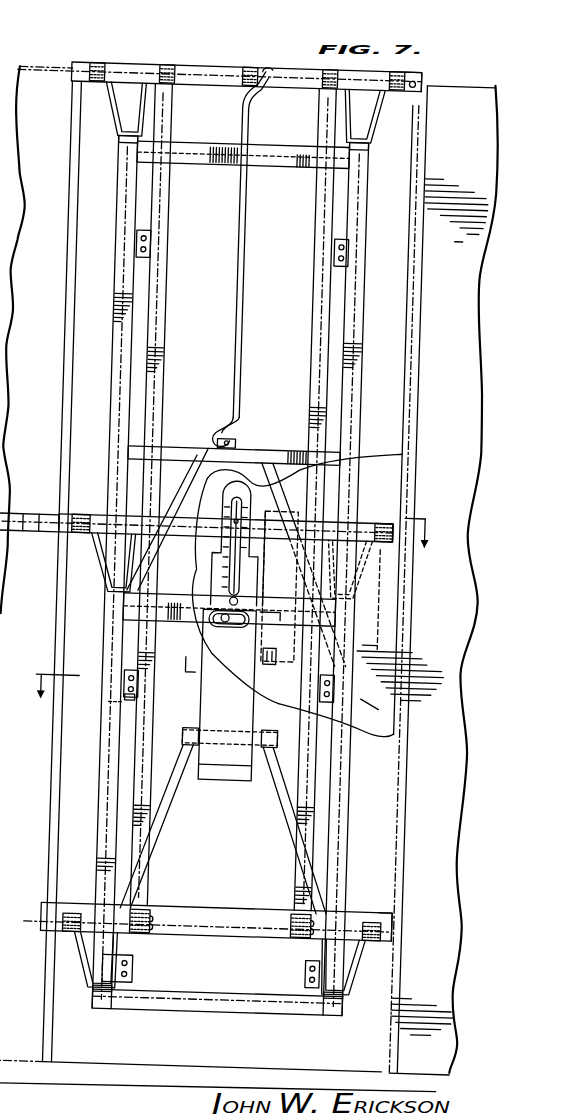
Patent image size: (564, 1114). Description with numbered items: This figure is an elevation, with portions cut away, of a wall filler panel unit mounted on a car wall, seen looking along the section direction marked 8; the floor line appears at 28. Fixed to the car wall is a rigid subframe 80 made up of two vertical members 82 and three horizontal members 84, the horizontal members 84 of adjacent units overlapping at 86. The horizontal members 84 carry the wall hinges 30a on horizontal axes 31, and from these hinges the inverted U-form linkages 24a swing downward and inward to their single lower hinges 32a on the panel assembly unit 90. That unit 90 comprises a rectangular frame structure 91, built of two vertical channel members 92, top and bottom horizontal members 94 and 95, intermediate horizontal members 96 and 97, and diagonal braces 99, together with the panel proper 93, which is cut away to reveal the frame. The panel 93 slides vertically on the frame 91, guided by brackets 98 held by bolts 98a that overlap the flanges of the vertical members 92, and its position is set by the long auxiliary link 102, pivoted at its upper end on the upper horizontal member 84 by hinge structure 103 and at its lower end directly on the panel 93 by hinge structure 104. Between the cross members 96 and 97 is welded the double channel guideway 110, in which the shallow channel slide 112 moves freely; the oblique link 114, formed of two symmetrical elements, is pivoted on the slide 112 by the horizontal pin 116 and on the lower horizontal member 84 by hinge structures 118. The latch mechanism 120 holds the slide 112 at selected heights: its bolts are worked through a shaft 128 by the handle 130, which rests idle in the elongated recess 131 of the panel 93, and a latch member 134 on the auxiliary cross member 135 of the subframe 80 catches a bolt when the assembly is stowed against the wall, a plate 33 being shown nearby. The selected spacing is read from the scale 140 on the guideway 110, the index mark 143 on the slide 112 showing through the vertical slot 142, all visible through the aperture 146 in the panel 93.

The section line 8- 8 is at (238, 608).
The linkage 24a is at (118, 126).
The floor 28 is at (86, 1080).
The hinge structure 30a is at (98, 62).
The axis 31 is at (135, 68).
The hinge structure 32a is at (128, 143).
The plate 33 is at (382, 585).
The subframe 80 is at (175, 132).
The vertical member 82 is at (175, 330).
The horizontal member 84 is at (362, 62).
The overlap 86 is at (68, 514).
The panel assembly unit 90 is at (148, 1064).
The frame structure 91 is at (90, 838).
The vertical member 92 is at (121, 778).
The panel proper 93 is at (412, 656).
The top horizontal member 94 is at (282, 139).
The bottom horizontal member 95 is at (278, 1008).
The intermediate horizontal member 96 is at (206, 598).
The intermediate horizontal member 97 is at (176, 448).
The bracket 98 is at (160, 243).
The bolt 98a is at (149, 696).
The diagonal brace 99 is at (206, 463).
The auxiliary link 102 is at (252, 290).
The hinge structure 103 is at (267, 62).
The hinge structure 104 is at (249, 428).
The double channel member 110 is at (273, 713).
The slide member 112 is at (244, 775).
The oblique link 114 is at (188, 810).
The horizontal pivot pin 116 is at (282, 740).
The hinge structure 118 is at (176, 904).
The latch mechanism 120 is at (280, 598).
The shaft 128 is at (224, 645).
The handle 130 is at (262, 660).
The recess 131 is at (286, 640).
The latch member 134 is at (279, 622).
The auxiliary cross member 135 is at (204, 668).
The scale 140 is at (236, 540).
The vertical slot 142 is at (256, 498).
The index mark 143 is at (258, 592).
The aperture 146 is at (256, 520).